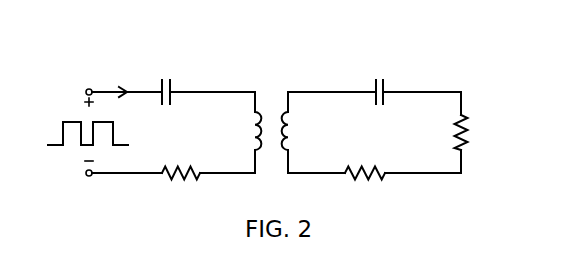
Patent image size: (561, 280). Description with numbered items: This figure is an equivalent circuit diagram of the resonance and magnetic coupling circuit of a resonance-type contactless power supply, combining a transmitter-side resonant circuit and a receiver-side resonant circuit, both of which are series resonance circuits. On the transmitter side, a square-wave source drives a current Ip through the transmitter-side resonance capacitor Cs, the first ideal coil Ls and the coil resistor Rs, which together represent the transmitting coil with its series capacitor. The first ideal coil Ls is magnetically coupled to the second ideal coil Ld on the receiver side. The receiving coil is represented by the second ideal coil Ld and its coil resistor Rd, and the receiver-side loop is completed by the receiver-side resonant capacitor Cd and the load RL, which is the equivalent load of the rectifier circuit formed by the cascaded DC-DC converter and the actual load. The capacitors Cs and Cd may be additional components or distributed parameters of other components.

The primary current Ip is at (127, 79).
The transmitter-side resonance capacitor Cs is at (169, 79).
The first ideal coil Ls is at (239, 131).
The coil resistor Rs is at (181, 160).
The receiver-side resonant capacitor Cd is at (378, 79).
The second ideal coil Ld is at (306, 131).
The coil resistor Rd is at (365, 164).
The load RL is at (477, 132).